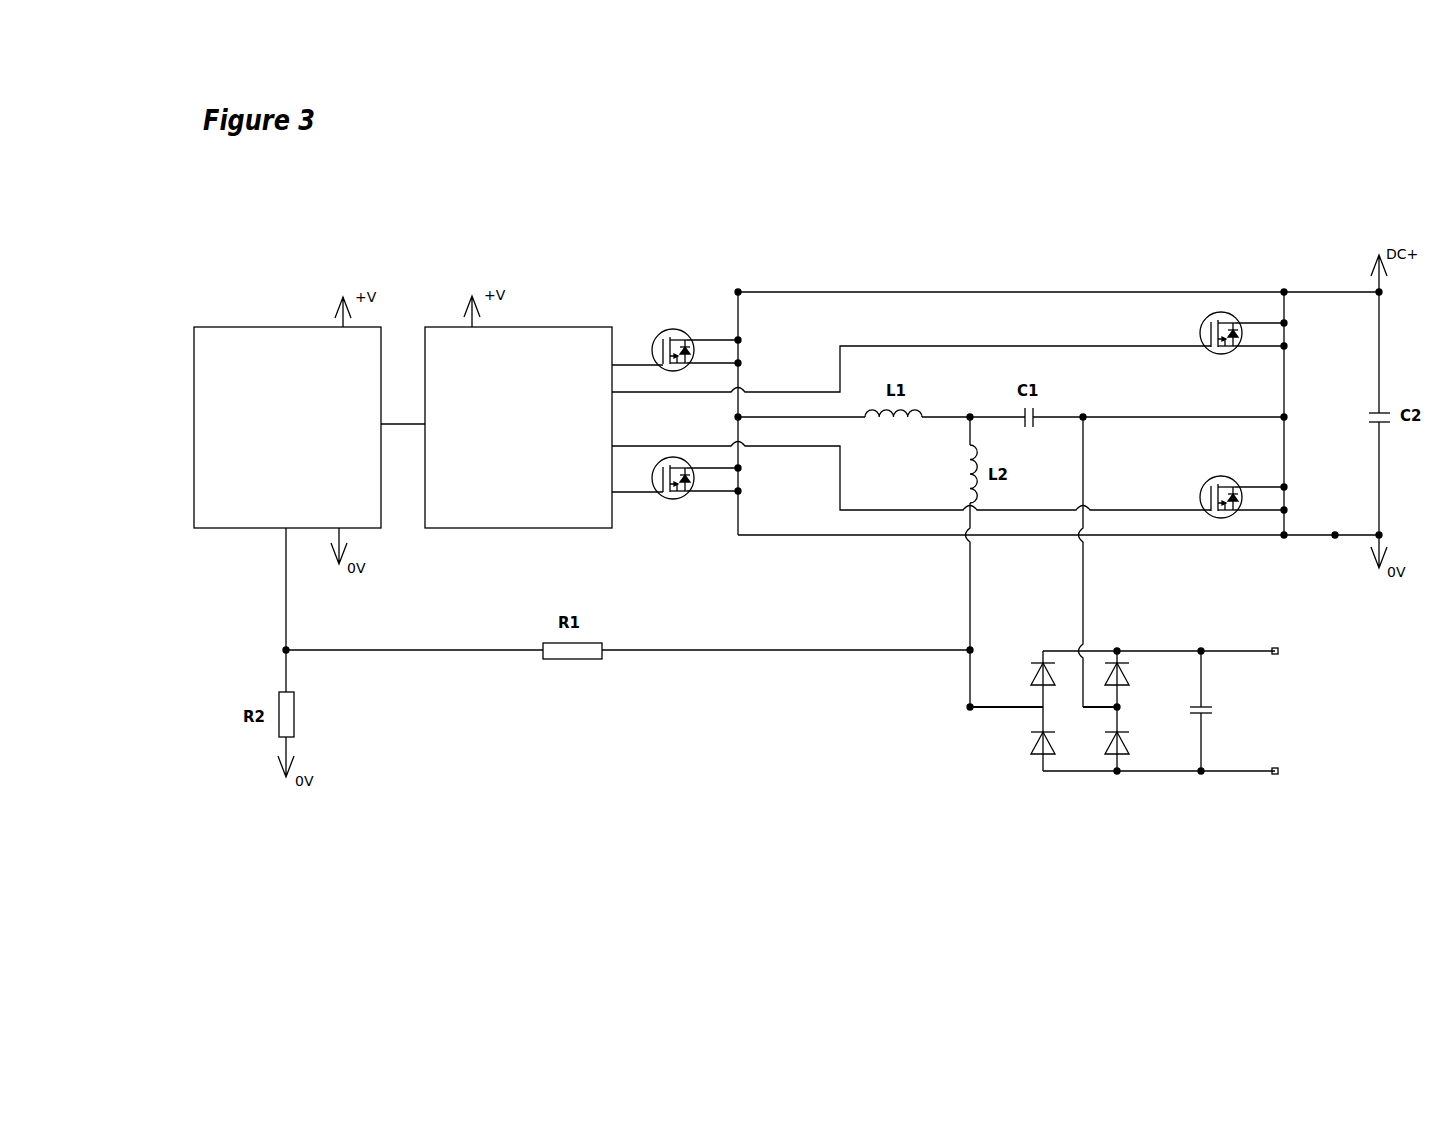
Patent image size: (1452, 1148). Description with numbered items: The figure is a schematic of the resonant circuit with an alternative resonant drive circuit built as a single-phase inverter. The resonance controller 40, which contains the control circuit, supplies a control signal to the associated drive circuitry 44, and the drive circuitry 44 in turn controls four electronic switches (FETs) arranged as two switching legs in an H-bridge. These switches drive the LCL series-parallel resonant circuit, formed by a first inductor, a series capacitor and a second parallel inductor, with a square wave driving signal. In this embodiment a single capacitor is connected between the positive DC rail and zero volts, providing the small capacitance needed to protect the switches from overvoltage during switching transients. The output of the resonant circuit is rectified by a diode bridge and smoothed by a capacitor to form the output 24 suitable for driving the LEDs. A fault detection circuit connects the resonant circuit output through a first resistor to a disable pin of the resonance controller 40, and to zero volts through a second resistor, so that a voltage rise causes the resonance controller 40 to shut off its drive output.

The resonance controller 40 is at (287, 427).
The drive circuitry 44 is at (518, 427).
The output 24 is at (1279, 729).